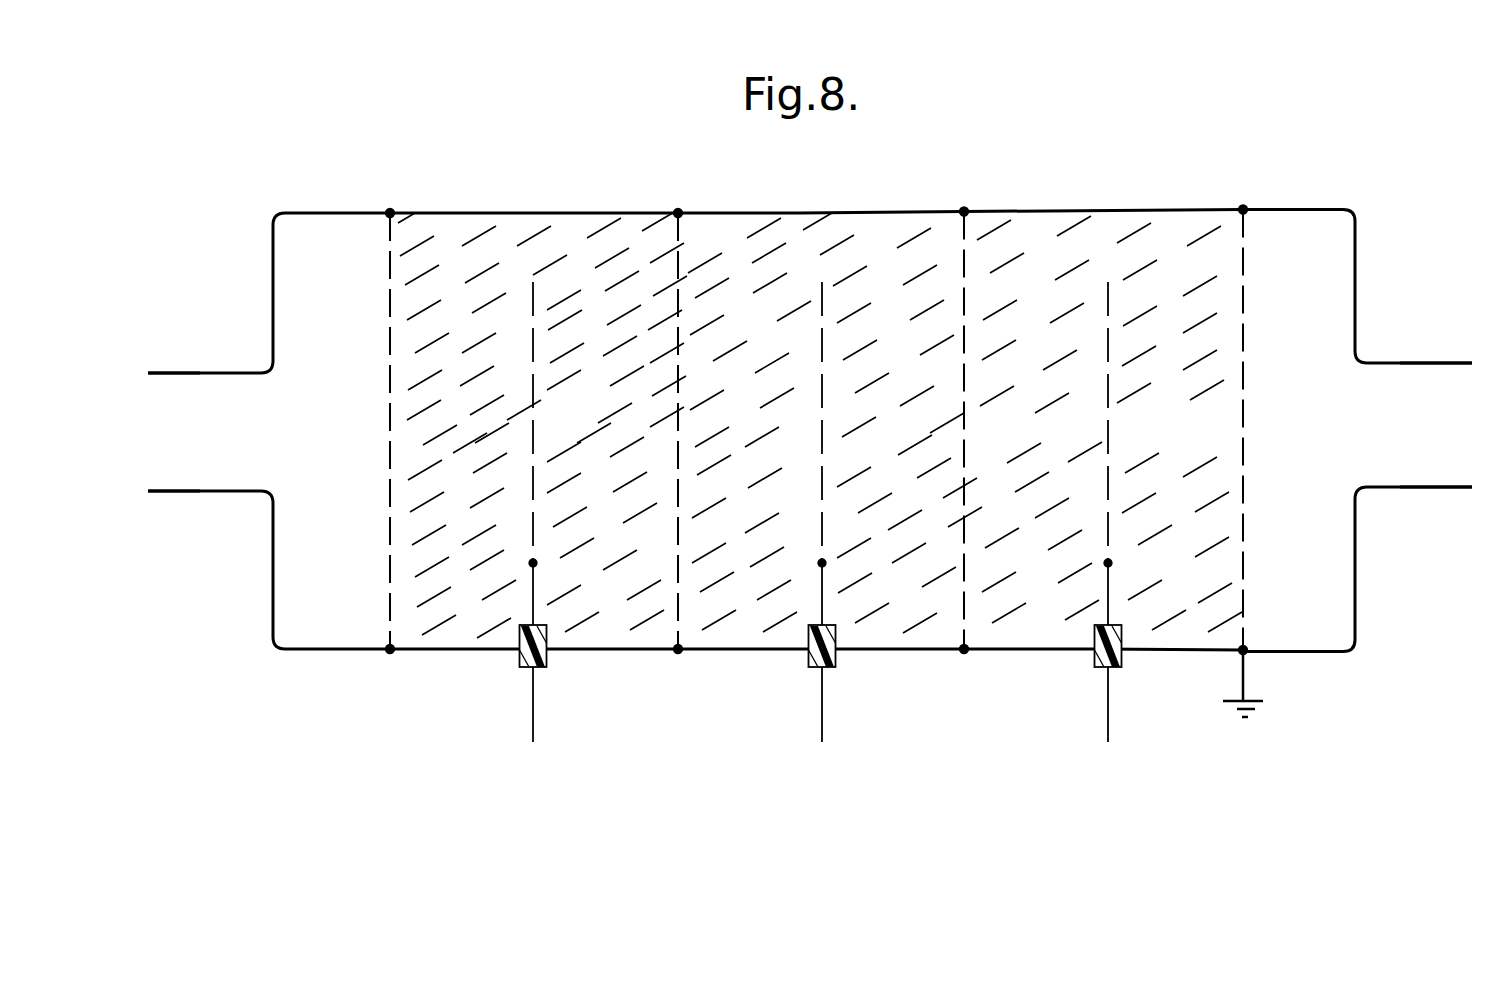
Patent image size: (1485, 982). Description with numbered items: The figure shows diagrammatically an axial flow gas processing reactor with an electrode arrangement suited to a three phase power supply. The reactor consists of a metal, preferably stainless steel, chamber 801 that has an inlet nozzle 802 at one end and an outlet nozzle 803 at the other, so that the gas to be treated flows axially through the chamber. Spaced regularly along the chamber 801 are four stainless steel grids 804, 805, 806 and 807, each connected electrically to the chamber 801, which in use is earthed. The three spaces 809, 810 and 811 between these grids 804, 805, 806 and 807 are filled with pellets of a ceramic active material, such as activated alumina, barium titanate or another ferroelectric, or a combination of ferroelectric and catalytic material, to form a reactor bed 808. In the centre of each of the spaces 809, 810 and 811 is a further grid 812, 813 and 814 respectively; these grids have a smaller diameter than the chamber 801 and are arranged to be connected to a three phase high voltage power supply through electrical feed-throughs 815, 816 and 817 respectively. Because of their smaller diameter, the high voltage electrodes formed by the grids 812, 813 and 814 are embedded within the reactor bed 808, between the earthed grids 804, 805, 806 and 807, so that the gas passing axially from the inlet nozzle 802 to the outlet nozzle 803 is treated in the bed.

The chamber 801 is at (821, 210).
The inlet nozzle 802 is at (198, 493).
The outlet nozzle 803 is at (1423, 362).
The stainless steel grid 804 is at (391, 227).
The stainless steel grid 805 is at (680, 230).
The stainless steel grid 806 is at (968, 227).
The stainless steel grid 807 is at (1245, 222).
The reactor bed 808 is at (594, 220).
The space 809 is at (907, 225).
The space 810 is at (1175, 220).
The space 811 is at (435, 628).
The grid 812 is at (518, 606).
The grid 813 is at (808, 600).
The grid 814 is at (1110, 543).
The electrical feed-through 815 is at (547, 657).
The electrical feed-through 816 is at (837, 658).
The electrical feed-through 817 is at (1123, 658).